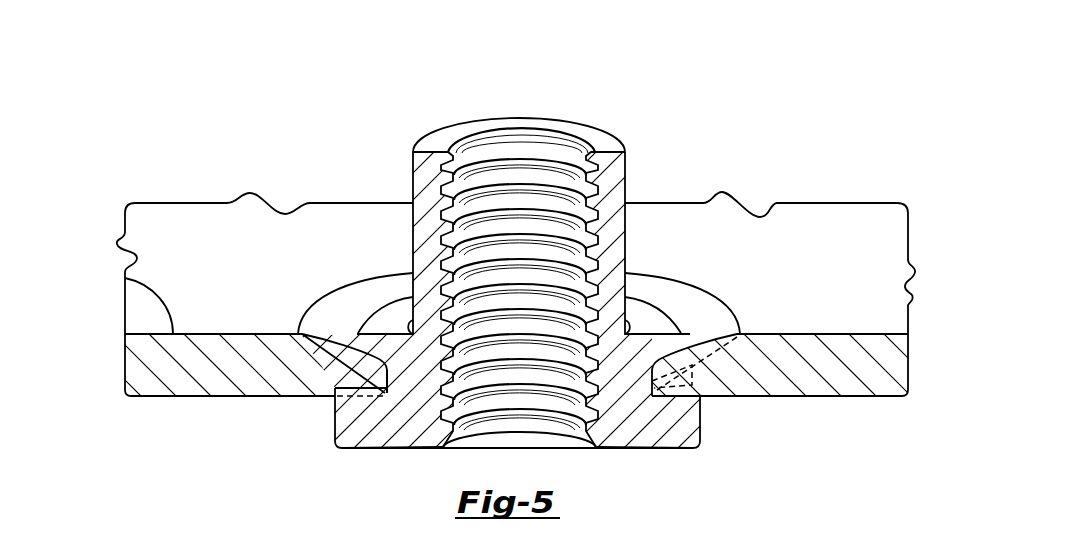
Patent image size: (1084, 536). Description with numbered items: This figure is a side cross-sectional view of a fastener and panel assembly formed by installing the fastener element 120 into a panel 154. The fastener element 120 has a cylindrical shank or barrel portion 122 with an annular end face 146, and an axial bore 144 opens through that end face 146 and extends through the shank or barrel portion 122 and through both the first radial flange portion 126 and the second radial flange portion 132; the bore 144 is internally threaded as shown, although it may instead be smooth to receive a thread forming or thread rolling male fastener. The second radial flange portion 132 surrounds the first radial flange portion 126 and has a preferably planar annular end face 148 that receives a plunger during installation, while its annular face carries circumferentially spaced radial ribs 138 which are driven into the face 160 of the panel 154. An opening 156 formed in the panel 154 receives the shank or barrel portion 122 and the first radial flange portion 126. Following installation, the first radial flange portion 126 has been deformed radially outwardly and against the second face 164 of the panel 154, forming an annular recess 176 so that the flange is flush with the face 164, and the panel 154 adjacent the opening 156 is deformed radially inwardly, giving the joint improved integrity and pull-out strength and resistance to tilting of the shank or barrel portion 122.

The fastener element 120 is at (516, 282).
The shank or barrel portion 122 is at (418, 226).
The first radial flange portion 126 is at (640, 308).
The second radial flange portion 132 is at (705, 420).
The radial ribs 138 is at (330, 388).
The bore 144 is at (536, 148).
The annular end face 146 is at (445, 140).
The annular end face 148 is at (641, 449).
The panel 154 is at (198, 242).
The opening 156 is at (388, 378).
The face 160 is at (156, 397).
The second face 164 is at (125, 278).
The annular recess 176 is at (318, 328).